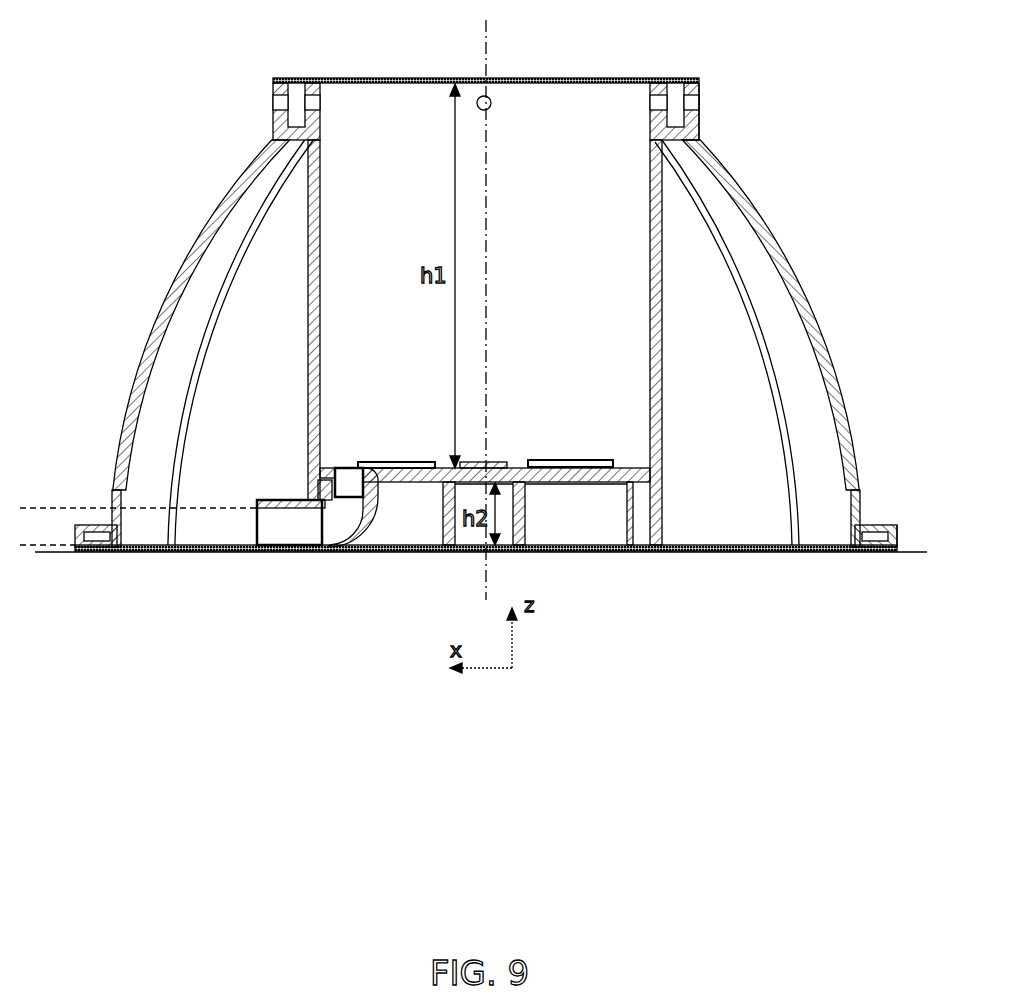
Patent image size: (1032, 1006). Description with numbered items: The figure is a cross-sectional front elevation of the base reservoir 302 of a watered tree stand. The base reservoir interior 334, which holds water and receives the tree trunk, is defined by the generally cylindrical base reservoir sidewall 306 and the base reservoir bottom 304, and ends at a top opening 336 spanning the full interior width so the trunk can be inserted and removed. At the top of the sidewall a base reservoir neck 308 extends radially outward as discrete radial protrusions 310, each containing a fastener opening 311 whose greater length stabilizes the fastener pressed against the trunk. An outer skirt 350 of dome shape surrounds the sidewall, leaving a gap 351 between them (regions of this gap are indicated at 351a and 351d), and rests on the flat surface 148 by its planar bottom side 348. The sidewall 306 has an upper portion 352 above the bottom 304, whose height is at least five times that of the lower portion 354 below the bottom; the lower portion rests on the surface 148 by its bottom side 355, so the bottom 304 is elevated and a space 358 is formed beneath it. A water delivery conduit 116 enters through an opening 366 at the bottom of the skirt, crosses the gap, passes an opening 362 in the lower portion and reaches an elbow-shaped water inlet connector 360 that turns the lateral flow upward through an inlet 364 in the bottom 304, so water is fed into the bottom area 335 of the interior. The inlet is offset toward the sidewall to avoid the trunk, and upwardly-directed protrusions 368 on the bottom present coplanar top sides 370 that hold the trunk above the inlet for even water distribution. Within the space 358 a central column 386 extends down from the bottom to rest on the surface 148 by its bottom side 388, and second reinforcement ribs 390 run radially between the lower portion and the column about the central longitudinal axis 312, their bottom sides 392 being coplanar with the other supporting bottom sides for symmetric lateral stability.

The base reservoir 302 is at (475, 322).
The base reservoir bottom 304 is at (597, 487).
The base reservoir sidewall 306 is at (662, 298).
The base reservoir neck 308 is at (699, 128).
The radial protrusions 310 is at (273, 89).
The fastener openings 311 is at (491, 97).
The central longitudinal axis 312 is at (484, 66).
The base reservoir interior 334 is at (549, 244).
The bottom area 335 is at (374, 419).
The top opening 336 is at (590, 72).
The bottom side 348 is at (100, 552).
The outer skirt 350 is at (172, 292).
The gap 351 is at (258, 322).
The air flow passage 351a is at (258, 355).
The air flow passage 351d is at (714, 356).
The upper portion 352 is at (662, 338).
The lower portion 354 is at (662, 512).
The bottom side 355 is at (655, 552).
The space 358 is at (387, 522).
The water inlet connector 360 is at (357, 552).
The opening 362 is at (320, 492).
The inlet 364 is at (350, 482).
The opening 366 is at (114, 490).
The protrusions 368 is at (365, 446).
The top side 370 is at (498, 462).
The central column 386 is at (528, 502).
The bottom side 388 is at (520, 552).
The second reinforcement ribs 390 is at (404, 518).
The bottom sides 392 is at (218, 552).
The water delivery conduit 116 is at (75, 508).
The flat surface 148 is at (897, 545).